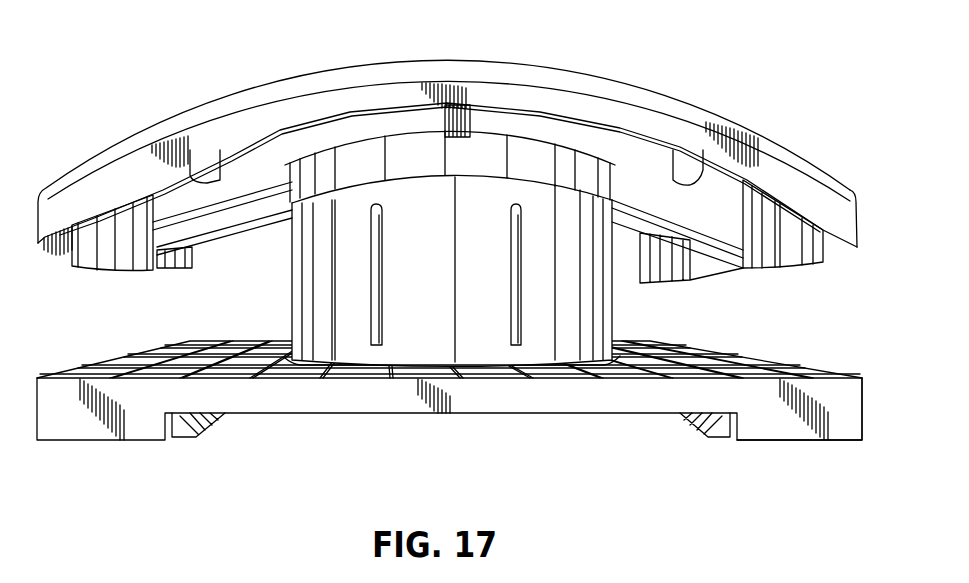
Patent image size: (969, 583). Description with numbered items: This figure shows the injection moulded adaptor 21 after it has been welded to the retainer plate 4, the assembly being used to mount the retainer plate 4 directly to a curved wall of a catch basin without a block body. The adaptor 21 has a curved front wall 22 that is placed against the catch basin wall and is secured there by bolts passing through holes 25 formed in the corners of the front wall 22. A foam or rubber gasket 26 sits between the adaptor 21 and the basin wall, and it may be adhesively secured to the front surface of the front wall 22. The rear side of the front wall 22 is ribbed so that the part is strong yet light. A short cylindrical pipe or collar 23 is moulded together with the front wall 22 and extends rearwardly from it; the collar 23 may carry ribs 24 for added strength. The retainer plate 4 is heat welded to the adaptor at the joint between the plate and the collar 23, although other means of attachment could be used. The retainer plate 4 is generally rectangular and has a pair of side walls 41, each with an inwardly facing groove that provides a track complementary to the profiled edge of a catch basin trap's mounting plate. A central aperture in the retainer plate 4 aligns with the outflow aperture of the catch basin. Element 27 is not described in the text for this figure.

The retainer plate 4 is at (636, 426).
The side walls 41 is at (837, 415).
The adaptor 21 is at (784, 133).
The front wall 22 is at (843, 218).
The collar 23 is at (292, 308).
The ribs 24 is at (512, 272).
The holes 25 is at (778, 272).
The gasket 26 is at (262, 92).
The bottom flange ring 27 is at (618, 335).